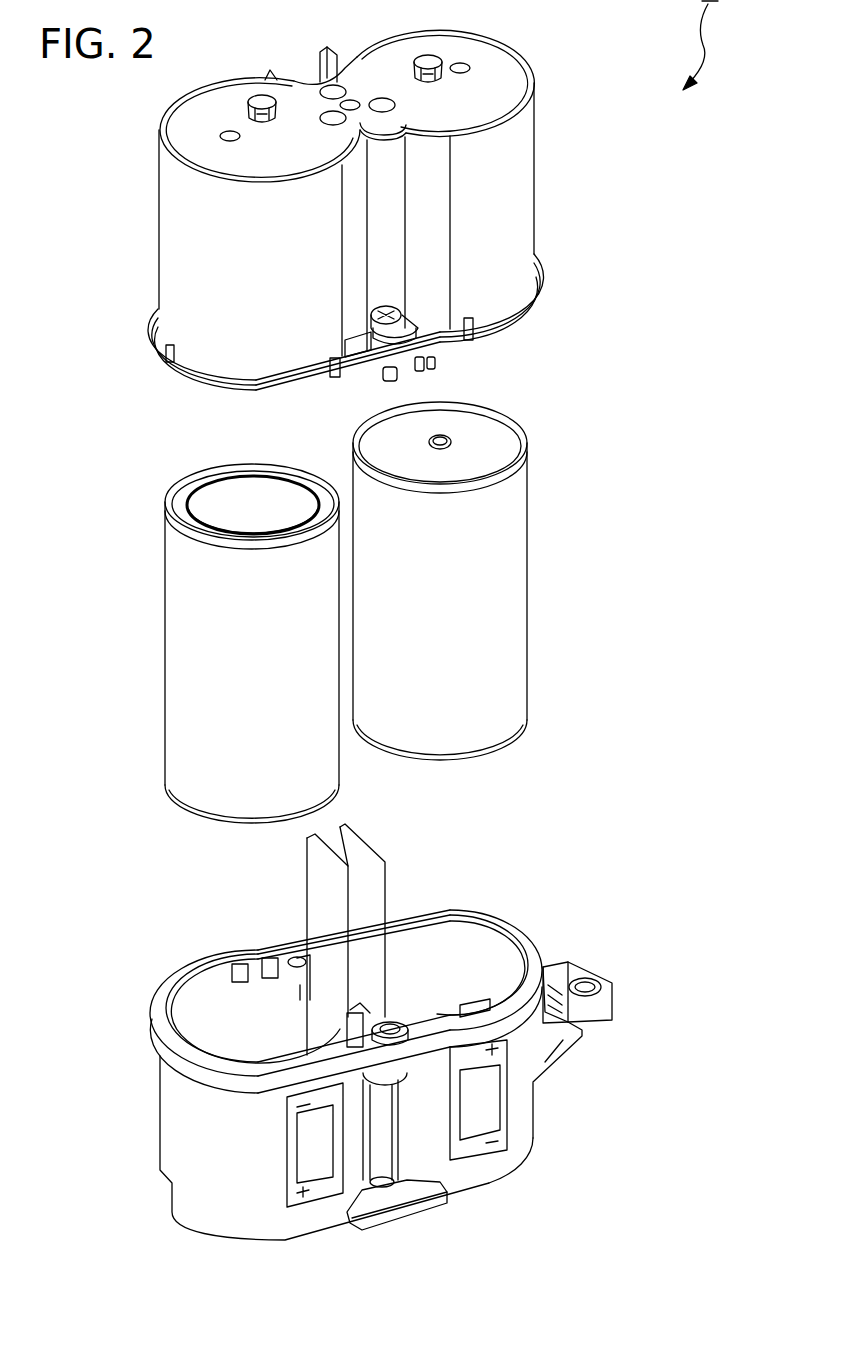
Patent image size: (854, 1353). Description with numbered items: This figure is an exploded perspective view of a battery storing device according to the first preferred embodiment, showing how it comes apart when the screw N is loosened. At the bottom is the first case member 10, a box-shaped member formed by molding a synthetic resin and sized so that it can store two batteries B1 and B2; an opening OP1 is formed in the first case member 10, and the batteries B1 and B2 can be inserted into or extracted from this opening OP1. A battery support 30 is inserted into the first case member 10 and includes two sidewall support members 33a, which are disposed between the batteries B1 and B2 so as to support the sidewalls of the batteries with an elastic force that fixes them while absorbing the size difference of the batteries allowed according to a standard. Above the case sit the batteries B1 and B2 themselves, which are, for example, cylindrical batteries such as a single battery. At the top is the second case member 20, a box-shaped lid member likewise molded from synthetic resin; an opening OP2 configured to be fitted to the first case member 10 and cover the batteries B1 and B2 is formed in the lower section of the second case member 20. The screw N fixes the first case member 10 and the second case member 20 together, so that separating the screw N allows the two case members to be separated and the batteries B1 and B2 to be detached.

The second case member 20 is at (510, 185).
The screw N is at (410, 318).
The opening OP2 is at (213, 390).
The battery B1 is at (178, 650).
The battery B2 is at (507, 578).
The battery support 30 is at (369, 934).
The sidewall support member 33a is at (395, 893).
The opening OP1 is at (207, 1030).
The first case member 10 is at (372, 1075).